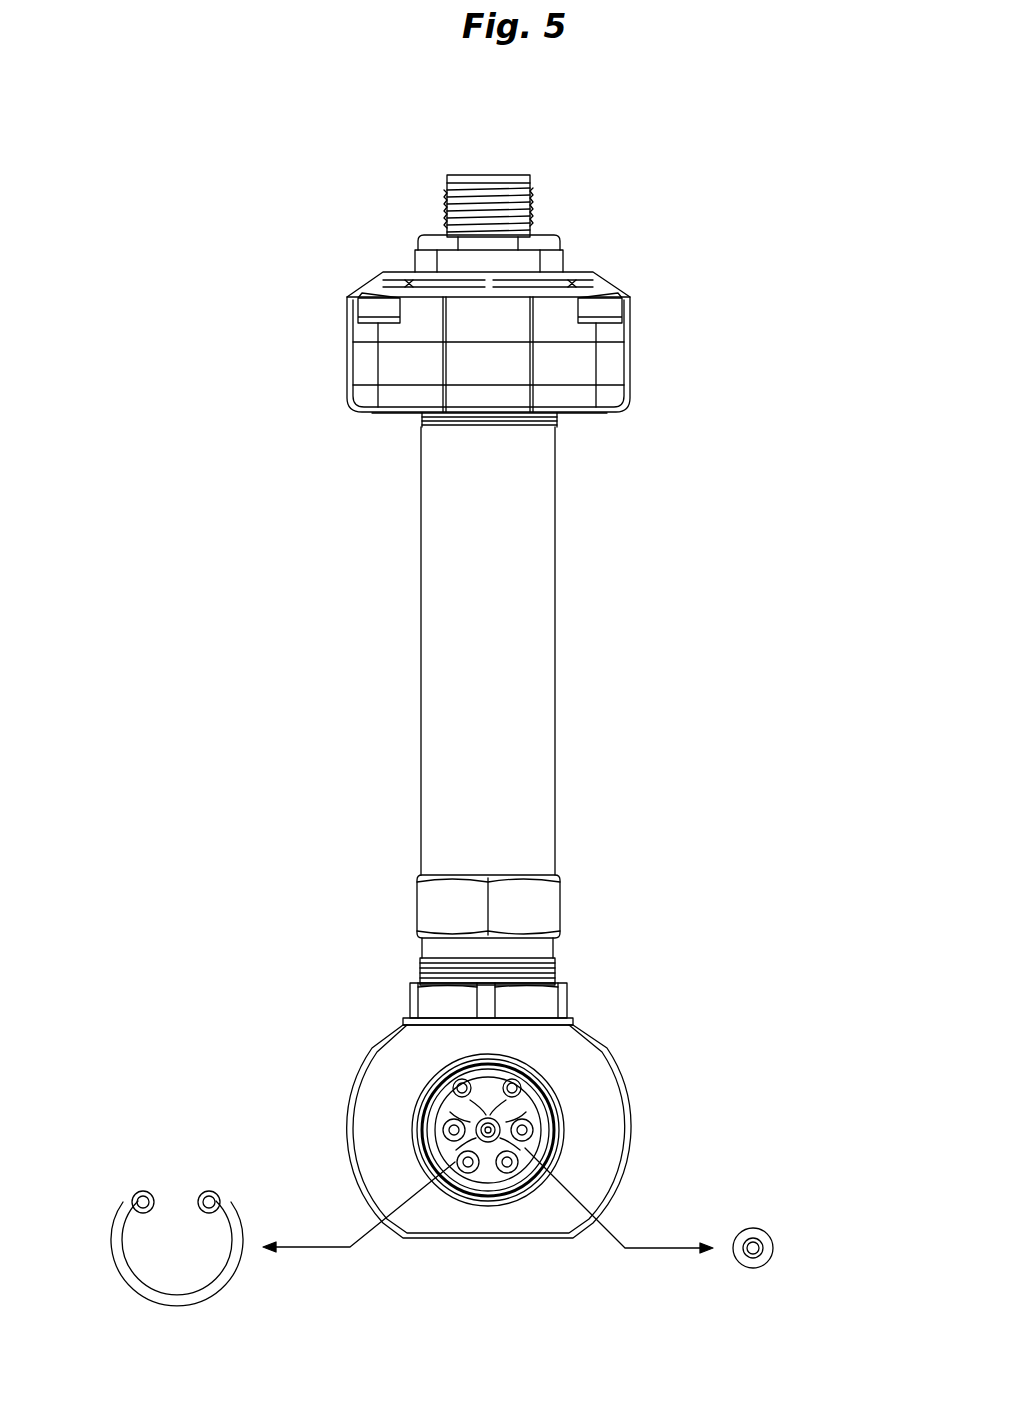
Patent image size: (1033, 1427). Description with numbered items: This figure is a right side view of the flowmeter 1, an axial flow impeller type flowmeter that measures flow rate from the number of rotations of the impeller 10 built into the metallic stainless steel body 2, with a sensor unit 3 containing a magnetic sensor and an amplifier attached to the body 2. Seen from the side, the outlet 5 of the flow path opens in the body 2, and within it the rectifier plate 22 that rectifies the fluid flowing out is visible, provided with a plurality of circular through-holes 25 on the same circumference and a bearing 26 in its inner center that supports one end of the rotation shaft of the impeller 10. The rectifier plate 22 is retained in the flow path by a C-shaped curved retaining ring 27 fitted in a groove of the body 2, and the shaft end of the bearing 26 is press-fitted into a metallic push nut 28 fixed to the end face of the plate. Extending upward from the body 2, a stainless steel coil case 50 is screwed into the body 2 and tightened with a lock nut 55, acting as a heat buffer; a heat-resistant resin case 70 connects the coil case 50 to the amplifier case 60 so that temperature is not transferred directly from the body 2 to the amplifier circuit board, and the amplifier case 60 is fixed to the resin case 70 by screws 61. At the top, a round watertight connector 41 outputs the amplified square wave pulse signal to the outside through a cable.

The flowmeter 1 is at (740, 120).
The body 2 is at (605, 1048).
The sensor unit 3 is at (603, 590).
The outlet 5 is at (455, 1078).
The impeller 10 is at (440, 1131).
The rectifier plate 22 is at (556, 1118).
The circular through-holes 25 is at (452, 1098).
The bearing 26 is at (488, 1143).
The retaining ring 27 is at (140, 1190).
The push nut 28 is at (758, 1228).
The round watertight connector 41 is at (507, 175).
The coil case 50 is at (417, 910).
The lock nut 55 is at (557, 985).
The amplifier case 60 is at (588, 272).
The screws 61 is at (372, 305).
The resin case 70 is at (421, 662).